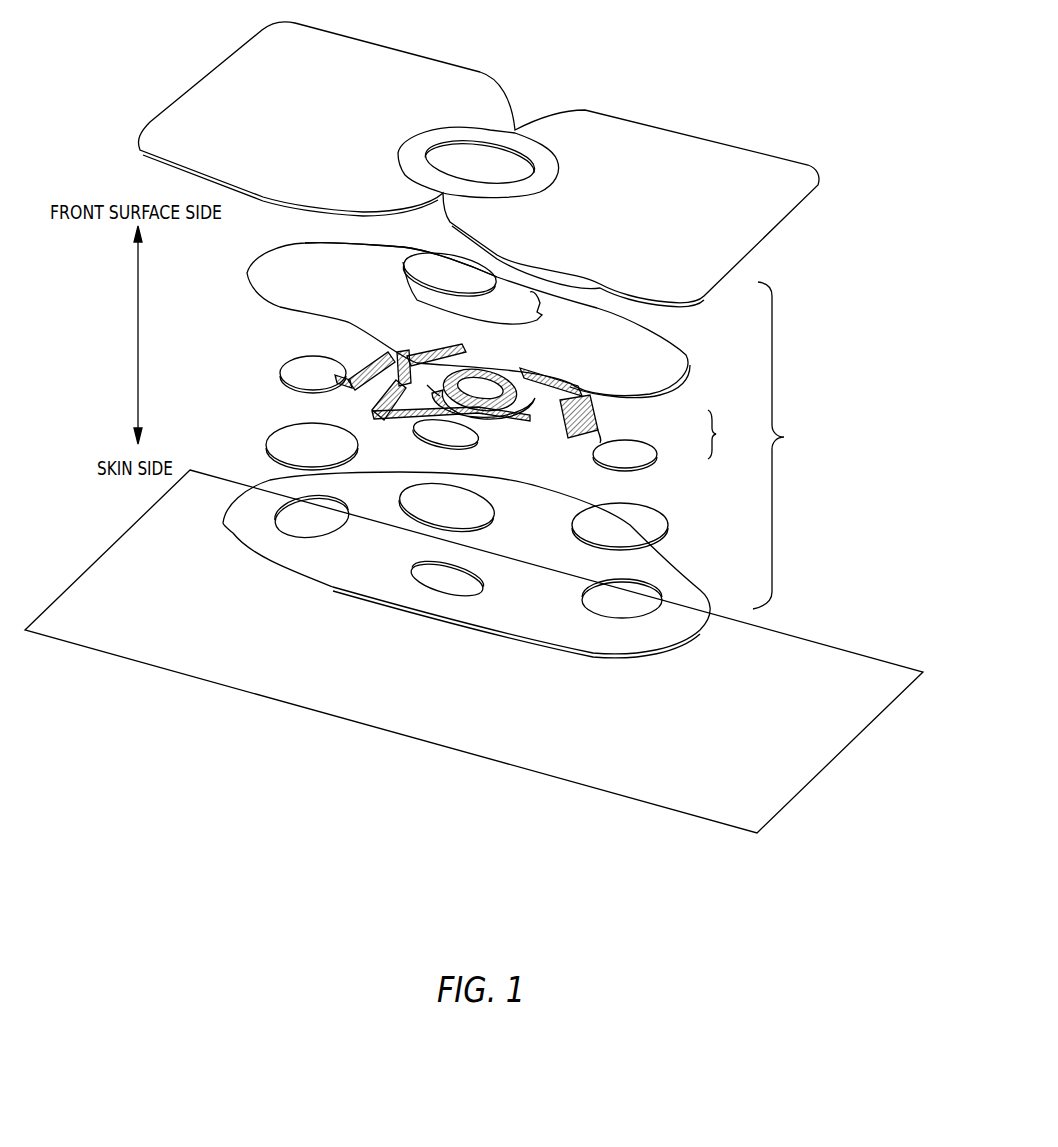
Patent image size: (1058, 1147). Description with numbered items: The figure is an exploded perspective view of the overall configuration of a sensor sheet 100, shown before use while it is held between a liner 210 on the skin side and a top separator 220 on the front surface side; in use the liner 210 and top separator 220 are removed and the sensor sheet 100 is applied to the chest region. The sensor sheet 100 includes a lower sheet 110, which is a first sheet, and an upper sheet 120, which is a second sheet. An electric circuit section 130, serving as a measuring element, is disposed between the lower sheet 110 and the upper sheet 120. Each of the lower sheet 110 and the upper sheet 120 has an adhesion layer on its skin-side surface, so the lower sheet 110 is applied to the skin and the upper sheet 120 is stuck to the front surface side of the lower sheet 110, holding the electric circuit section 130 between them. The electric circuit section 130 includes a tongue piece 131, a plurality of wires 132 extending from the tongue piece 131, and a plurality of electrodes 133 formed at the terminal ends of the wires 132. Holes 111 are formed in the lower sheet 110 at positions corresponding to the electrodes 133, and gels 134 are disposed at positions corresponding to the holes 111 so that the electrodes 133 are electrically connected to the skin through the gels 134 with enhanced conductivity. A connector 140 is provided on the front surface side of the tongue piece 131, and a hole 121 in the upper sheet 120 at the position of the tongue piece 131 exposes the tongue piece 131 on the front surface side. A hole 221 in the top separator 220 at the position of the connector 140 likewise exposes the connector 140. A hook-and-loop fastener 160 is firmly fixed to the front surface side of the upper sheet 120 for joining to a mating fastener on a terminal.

The sensor sheet 100 is at (789, 445).
The lower sheet 110 is at (660, 552).
The holes 111 is at (290, 500).
The upper sheet 120 is at (687, 360).
The hole 121 is at (417, 303).
The electric circuit section 130 is at (552, 401).
The tongue piece 131 is at (523, 410).
The wires 132 is at (375, 370).
The electrodes 133 is at (295, 373).
The gels 134 is at (296, 428).
The connector 140 is at (510, 377).
The hook-and-loop fastener 160 is at (403, 245).
The liner 210 is at (803, 645).
The top separator 220 is at (713, 138).
The hole 221 is at (493, 147).